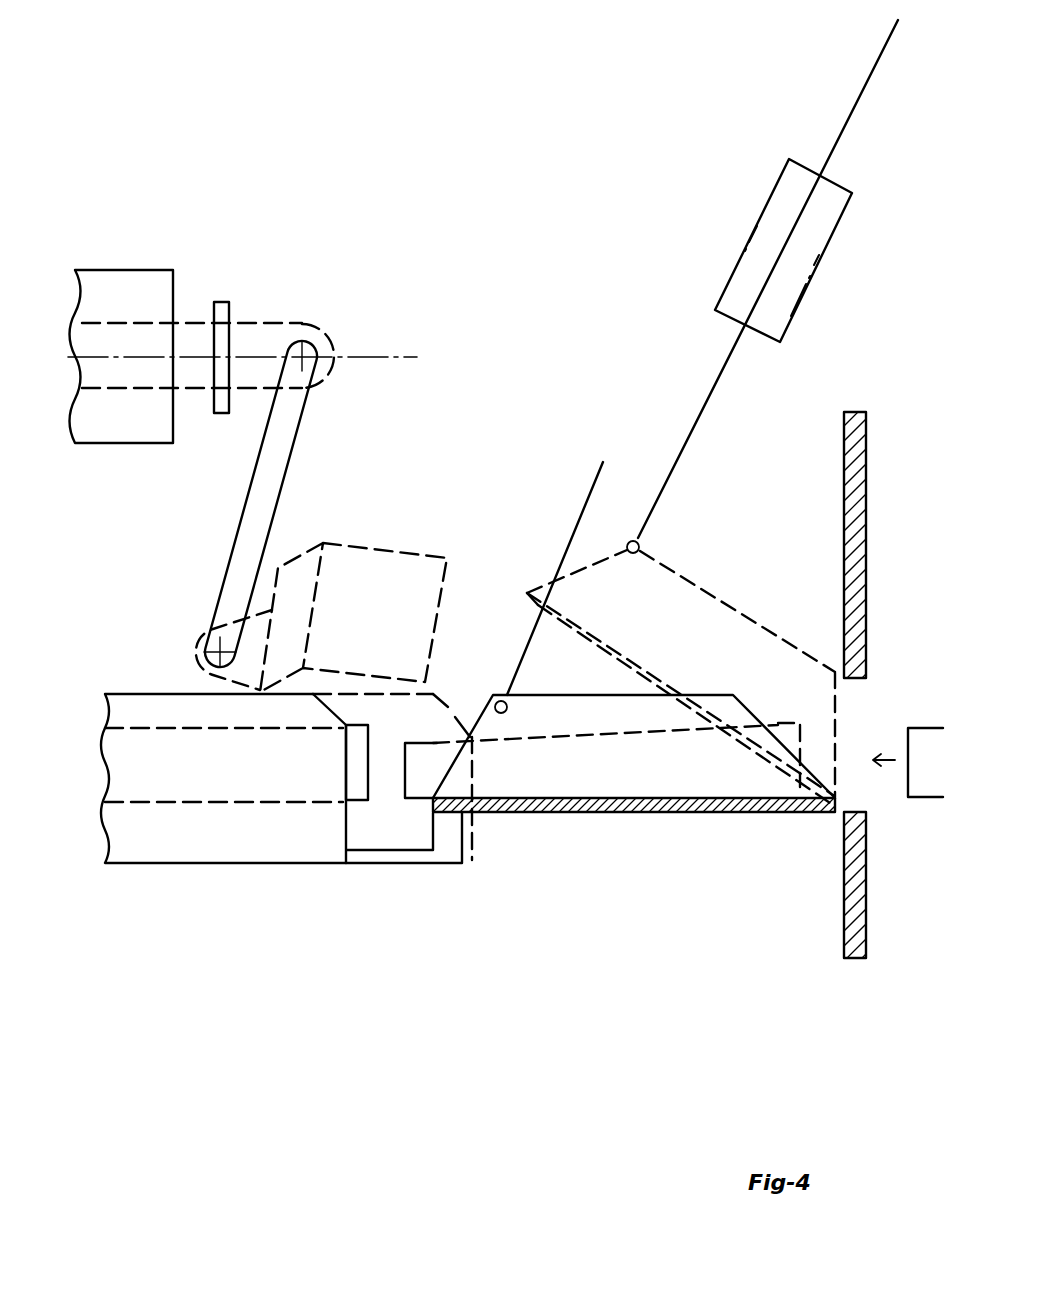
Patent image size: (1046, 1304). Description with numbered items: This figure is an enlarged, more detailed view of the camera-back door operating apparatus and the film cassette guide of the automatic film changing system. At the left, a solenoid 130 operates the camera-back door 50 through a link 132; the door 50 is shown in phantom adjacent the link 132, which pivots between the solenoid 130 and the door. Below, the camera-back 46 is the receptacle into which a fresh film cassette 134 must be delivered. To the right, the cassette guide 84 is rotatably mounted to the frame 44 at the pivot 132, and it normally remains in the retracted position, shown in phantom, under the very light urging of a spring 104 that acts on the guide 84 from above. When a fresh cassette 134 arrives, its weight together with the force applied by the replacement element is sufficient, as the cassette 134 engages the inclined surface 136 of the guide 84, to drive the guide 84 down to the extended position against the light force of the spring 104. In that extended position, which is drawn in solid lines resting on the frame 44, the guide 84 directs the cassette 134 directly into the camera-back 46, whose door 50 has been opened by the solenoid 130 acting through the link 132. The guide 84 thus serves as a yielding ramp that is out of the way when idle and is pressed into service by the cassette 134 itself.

The solenoid 130 is at (100, 422).
The link 132 is at (267, 500).
The camera-back door 50 is at (395, 563).
The camera-back 46 is at (148, 705).
The film cassette 134 is at (207, 782).
The cassette guide 84 is at (700, 598).
The inclined surface 136 is at (600, 575).
The spring 104 is at (812, 245).
The frame 44 is at (865, 447).